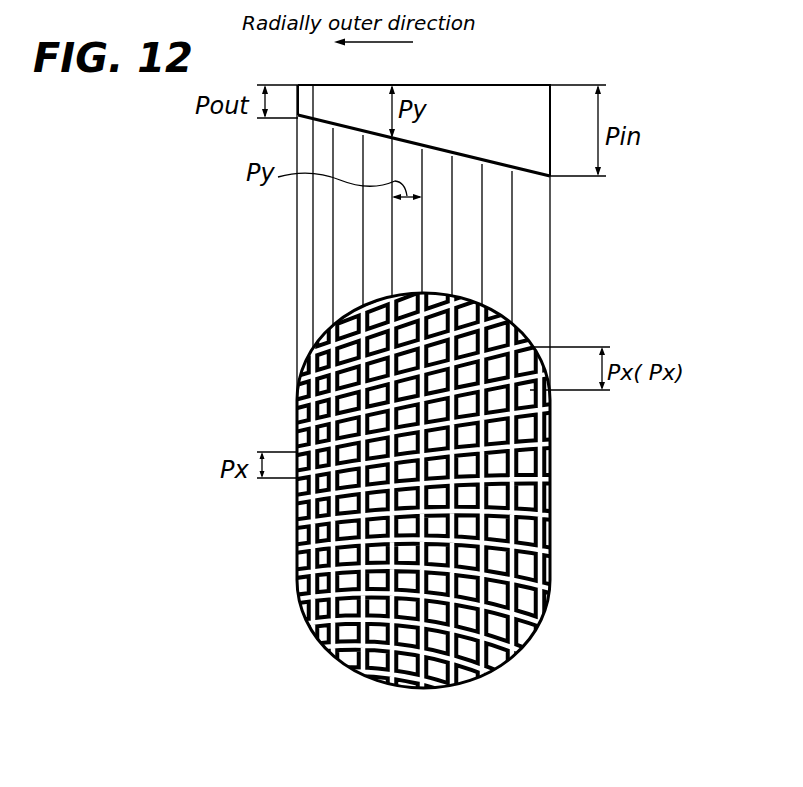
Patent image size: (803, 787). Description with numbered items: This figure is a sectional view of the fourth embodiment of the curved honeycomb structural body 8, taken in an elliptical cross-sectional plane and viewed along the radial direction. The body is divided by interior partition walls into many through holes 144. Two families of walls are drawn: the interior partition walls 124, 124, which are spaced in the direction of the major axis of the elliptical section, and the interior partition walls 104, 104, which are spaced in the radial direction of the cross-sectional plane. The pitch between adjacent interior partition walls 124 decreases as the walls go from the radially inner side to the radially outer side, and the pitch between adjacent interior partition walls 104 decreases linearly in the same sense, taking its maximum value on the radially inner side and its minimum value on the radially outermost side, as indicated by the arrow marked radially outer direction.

The honeycomb structural body 8 is at (300, 600).
The interior partition walls 104 is at (421, 490).
The interior partition walls 124 is at (466, 488).
The through holes 144 is at (320, 431).